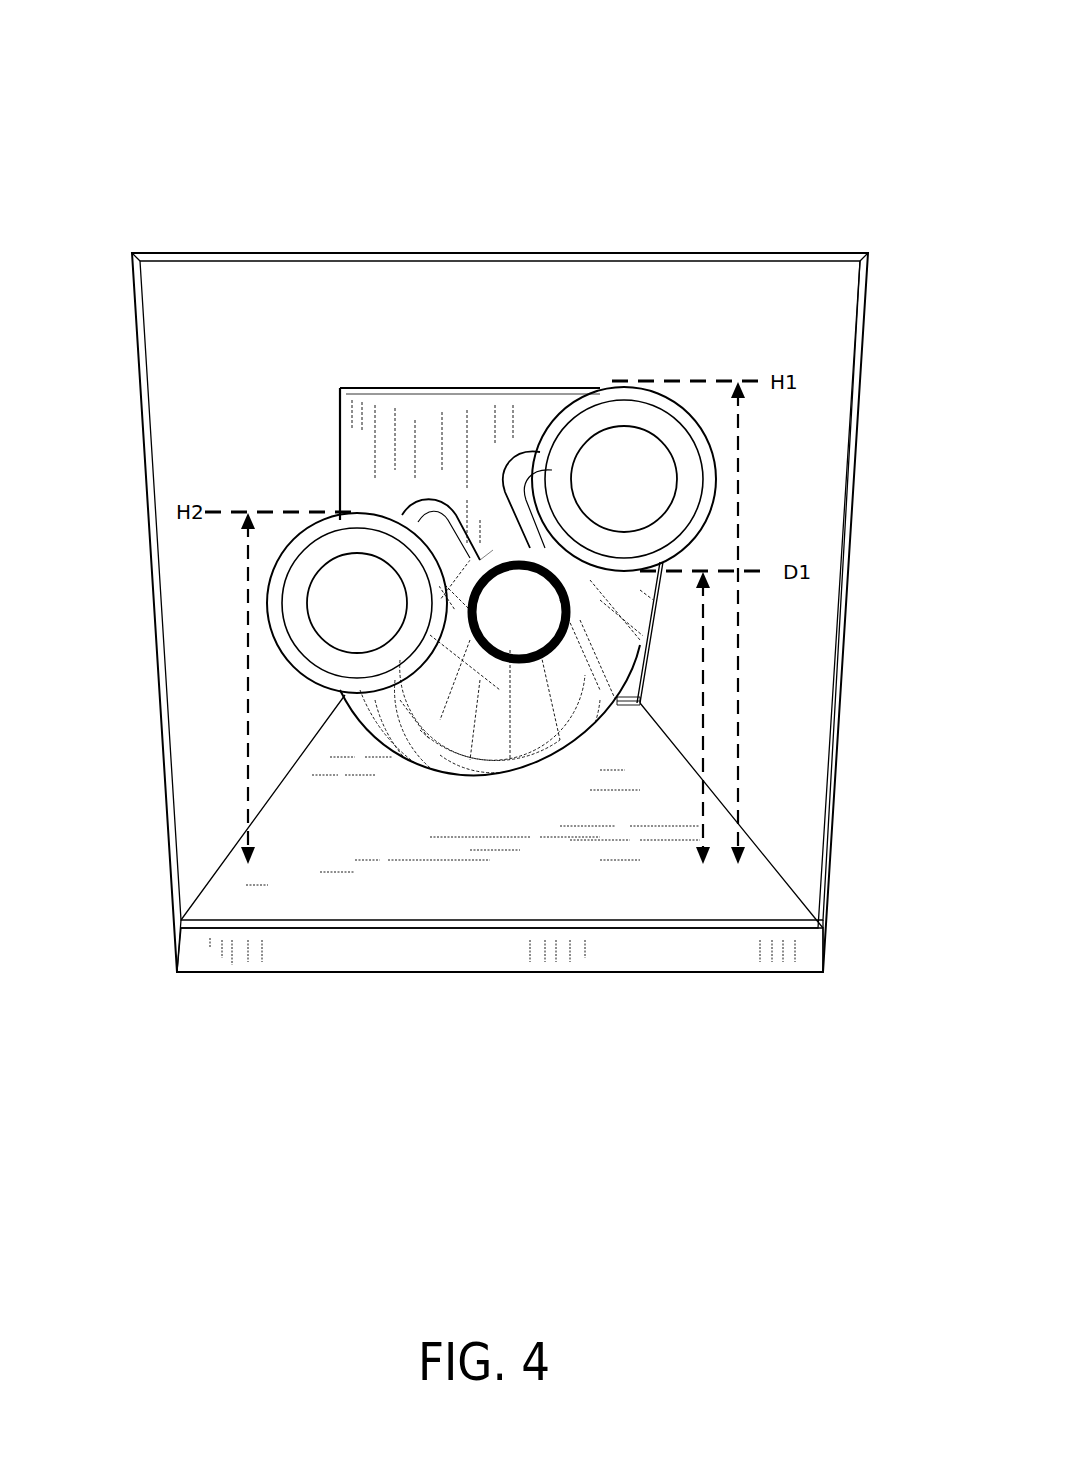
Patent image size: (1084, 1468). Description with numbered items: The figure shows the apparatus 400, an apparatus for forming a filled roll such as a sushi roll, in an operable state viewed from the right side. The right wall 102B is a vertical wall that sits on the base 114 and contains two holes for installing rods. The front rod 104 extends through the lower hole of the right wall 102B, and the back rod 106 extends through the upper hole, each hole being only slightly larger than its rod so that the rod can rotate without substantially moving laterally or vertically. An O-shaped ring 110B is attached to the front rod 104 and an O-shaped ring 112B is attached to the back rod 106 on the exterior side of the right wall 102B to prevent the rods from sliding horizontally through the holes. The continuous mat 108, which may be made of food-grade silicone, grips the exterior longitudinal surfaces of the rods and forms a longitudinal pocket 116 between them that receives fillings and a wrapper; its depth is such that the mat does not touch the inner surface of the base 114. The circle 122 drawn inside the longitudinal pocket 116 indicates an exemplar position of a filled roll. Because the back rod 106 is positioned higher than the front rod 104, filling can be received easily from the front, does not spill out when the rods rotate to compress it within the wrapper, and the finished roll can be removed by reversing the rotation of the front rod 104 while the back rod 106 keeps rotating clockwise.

The apparatus 400 is at (866, 74).
The right wall 102B is at (500, 612).
The front rod 104 is at (298, 612).
The back rod 106 is at (676, 453).
The continuous mat 108 is at (455, 782).
The O-shaped ring 110B is at (290, 548).
The O-shaped ring 112B is at (703, 528).
The base 114 is at (558, 972).
The longitudinal pocket 116 is at (490, 544).
The circle 122 is at (573, 620).